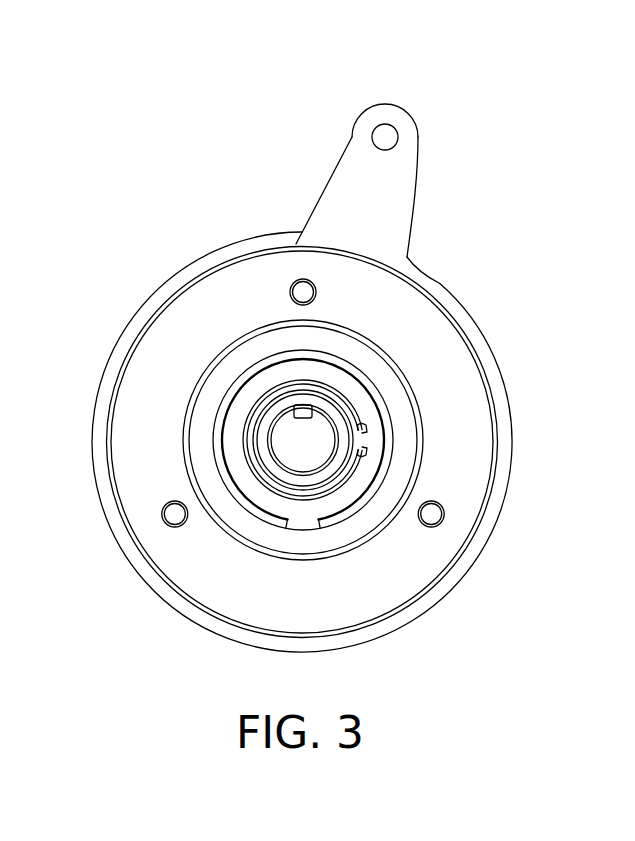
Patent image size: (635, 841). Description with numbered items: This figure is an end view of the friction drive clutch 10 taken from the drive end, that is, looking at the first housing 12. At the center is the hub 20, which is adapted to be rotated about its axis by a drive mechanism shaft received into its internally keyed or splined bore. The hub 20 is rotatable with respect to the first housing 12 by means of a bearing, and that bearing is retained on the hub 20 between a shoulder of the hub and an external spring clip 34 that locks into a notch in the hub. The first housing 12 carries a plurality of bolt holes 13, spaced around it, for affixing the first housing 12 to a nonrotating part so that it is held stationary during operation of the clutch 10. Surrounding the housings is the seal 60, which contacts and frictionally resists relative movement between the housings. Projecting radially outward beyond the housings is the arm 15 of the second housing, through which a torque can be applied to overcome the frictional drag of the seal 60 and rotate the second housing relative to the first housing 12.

The friction drive clutch 10 is at (526, 121).
The first housing 12 is at (462, 461).
The bolt holes 13 is at (432, 518).
The arm 15 is at (388, 184).
The hub 20 is at (326, 374).
The external spring clip 34 is at (360, 428).
The seal 60 is at (446, 290).